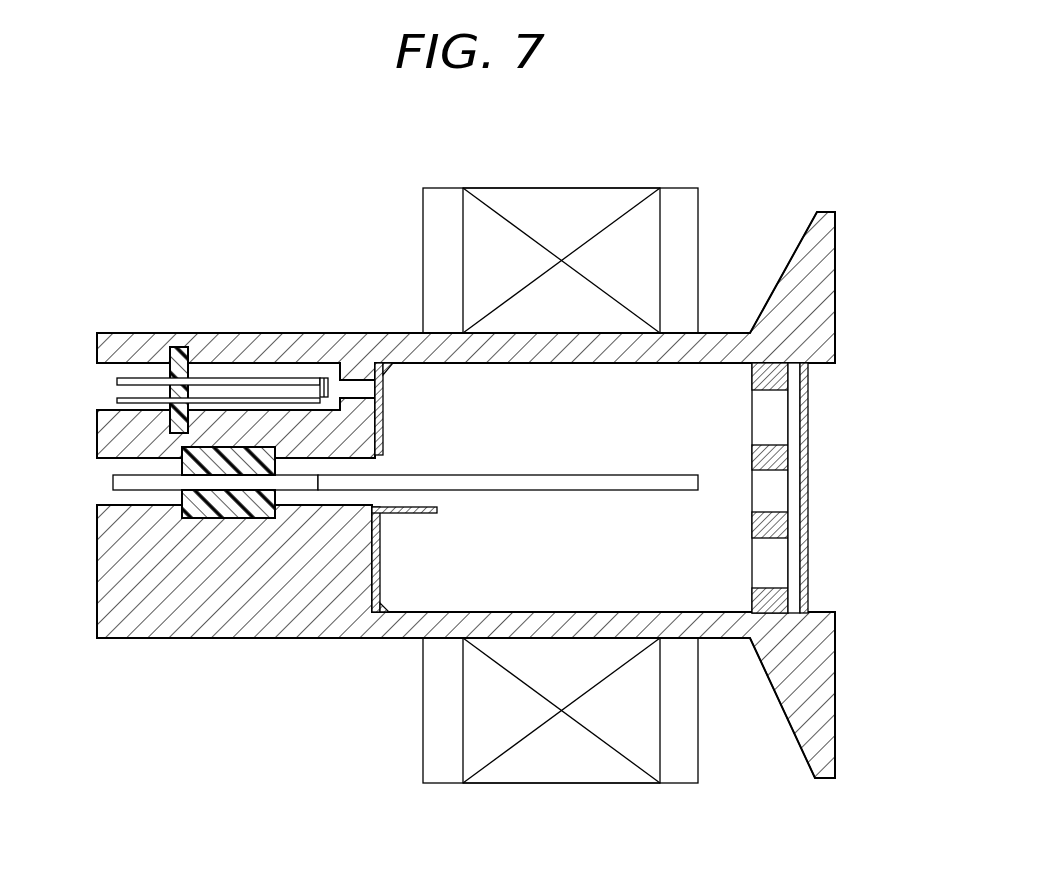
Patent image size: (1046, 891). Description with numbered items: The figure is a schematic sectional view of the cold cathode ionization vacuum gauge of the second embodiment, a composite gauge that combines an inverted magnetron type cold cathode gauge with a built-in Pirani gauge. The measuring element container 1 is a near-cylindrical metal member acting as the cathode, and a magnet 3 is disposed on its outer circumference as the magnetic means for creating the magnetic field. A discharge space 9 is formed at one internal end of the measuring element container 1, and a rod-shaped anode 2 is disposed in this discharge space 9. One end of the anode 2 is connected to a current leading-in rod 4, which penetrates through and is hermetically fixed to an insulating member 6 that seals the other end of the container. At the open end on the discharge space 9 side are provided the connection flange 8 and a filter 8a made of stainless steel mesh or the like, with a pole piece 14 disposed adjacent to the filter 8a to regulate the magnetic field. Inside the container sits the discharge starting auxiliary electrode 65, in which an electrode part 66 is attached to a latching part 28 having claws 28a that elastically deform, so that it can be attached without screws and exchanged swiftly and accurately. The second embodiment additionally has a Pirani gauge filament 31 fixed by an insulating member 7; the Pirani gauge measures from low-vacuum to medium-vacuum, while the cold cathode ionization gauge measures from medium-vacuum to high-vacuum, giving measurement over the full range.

The measuring element container 1 is at (272, 618).
The anode 2 is at (588, 478).
The magnet 3 is at (585, 200).
The current leading-in rod 4 is at (115, 482).
The insulating member 6 is at (190, 512).
The insulating member 7 is at (185, 348).
The connection flange 8 is at (822, 735).
The filter 8a is at (805, 520).
The discharge space 9 is at (690, 527).
The pole piece 14 is at (780, 462).
The latching part 28 is at (378, 567).
The claw 28a is at (397, 381).
The Pirani gauge filament 31 is at (282, 380).
The discharge starting auxiliary electrode 65 is at (458, 559).
The electrode part 66 is at (420, 515).